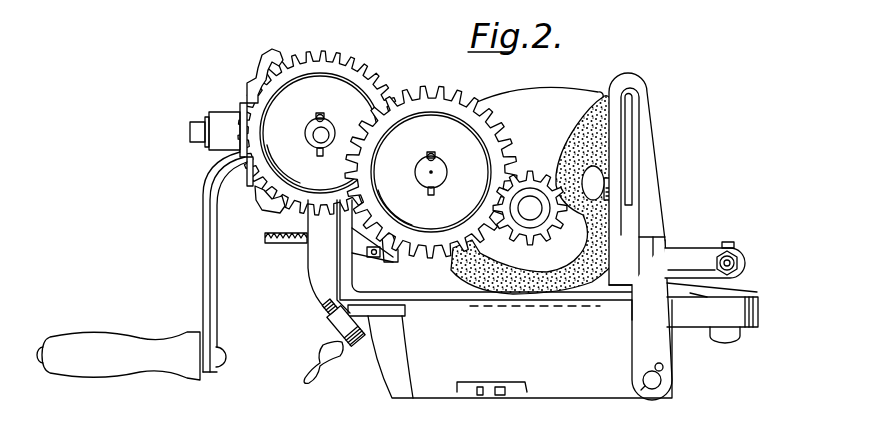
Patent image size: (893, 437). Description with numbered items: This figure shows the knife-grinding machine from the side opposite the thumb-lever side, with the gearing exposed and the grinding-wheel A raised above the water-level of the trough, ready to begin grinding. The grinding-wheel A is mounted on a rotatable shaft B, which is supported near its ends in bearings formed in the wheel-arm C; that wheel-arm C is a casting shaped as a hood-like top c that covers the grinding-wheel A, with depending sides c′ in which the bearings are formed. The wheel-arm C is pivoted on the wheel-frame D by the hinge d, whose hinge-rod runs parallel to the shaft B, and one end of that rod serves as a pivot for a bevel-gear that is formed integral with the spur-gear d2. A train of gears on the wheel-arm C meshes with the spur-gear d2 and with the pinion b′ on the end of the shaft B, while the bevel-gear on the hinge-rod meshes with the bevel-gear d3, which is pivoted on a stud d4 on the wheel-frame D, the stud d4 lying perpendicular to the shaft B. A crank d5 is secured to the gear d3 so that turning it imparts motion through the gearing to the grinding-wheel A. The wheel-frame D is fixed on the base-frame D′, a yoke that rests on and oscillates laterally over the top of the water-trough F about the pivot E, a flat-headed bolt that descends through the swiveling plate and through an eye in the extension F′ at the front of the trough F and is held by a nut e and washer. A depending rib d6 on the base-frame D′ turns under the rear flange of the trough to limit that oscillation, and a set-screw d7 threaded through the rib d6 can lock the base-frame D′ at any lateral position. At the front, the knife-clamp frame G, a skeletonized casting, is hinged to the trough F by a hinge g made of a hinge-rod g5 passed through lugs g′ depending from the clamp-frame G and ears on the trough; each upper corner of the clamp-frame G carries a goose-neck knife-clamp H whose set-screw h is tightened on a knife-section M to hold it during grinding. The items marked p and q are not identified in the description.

The grinding-wheel A is at (503, 253).
The rotatable shaft B is at (530, 208).
The wheel-arm C is at (431, 164).
The hood-like top c is at (570, 104).
The depending sides c′ is at (530, 197).
The pinion b′ is at (537, 195).
The wheel-frame D is at (329, 259).
The base-frame D′ is at (740, 292).
The hinge d is at (320, 134).
The spur-gear d2 is at (320, 133).
The bevel-gear d3 is at (262, 120).
The stud d4 is at (198, 131).
The crank d5 is at (142, 266).
The depending rib d6 is at (328, 315).
The set-screw d7 is at (318, 362).
The pivot E is at (738, 265).
The nut e is at (725, 343).
The water-trough F is at (552, 344).
The extension F′ is at (710, 322).
The knife-clamp frame G is at (658, 333).
The hinge g is at (650, 357).
The lugs g′ is at (643, 313).
The hinge-rod g5 is at (656, 384).
The knife-clamp H is at (645, 108).
The set-screw h is at (602, 183).
The knife-section M is at (627, 157).
The rack p is at (280, 247).
The arm q is at (705, 260).